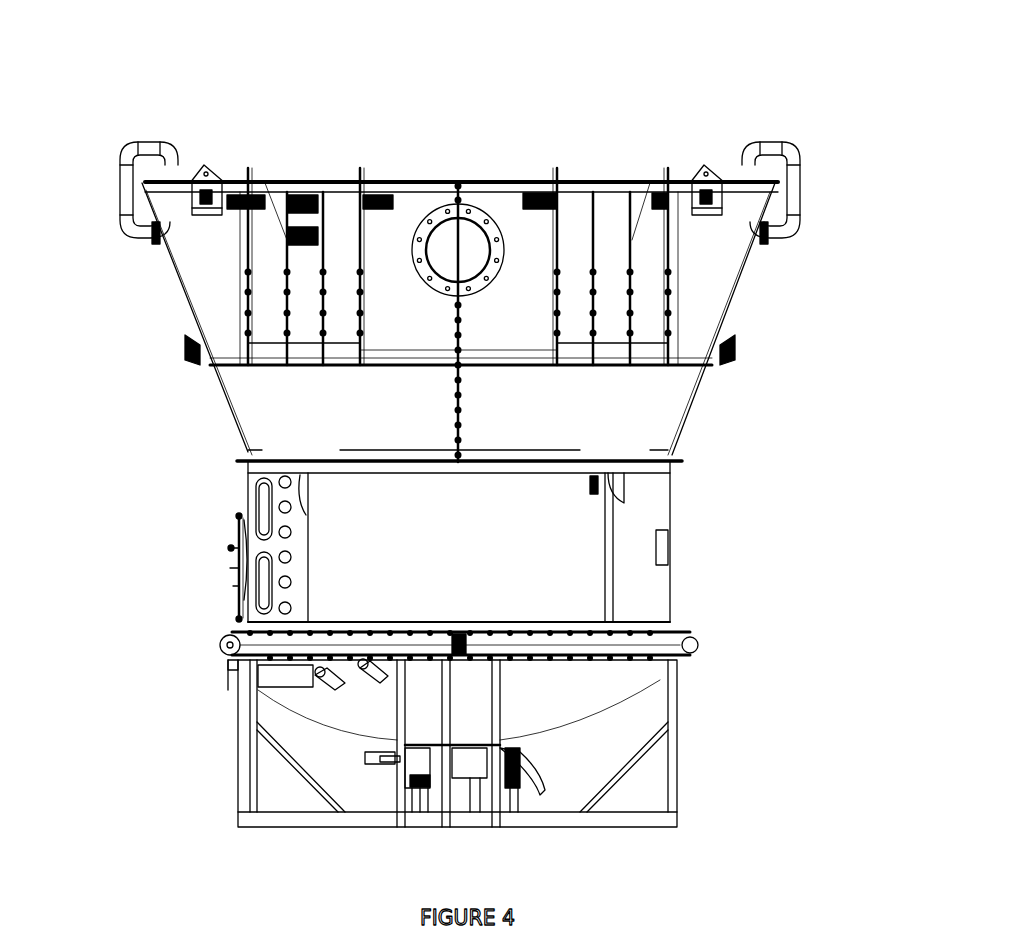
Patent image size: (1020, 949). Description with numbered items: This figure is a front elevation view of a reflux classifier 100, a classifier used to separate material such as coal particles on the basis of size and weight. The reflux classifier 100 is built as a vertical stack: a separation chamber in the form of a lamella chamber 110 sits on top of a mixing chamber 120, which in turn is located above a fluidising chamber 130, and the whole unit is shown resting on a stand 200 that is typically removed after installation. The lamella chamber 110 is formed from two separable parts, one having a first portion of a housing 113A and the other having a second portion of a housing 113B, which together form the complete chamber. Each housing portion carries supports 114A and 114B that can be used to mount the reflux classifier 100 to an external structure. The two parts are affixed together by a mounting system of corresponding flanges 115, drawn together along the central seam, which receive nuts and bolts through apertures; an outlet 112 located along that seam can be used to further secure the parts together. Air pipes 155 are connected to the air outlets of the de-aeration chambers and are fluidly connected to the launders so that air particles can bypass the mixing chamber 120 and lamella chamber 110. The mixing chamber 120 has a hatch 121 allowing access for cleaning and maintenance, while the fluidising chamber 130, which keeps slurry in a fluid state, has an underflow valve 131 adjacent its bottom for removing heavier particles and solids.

The reflux classifier 100 is at (765, 65).
The lamella chamber 110 is at (410, 208).
The outlet 112 is at (482, 208).
The first portion of a housing 113A is at (210, 263).
The second portion of a housing 113B is at (706, 263).
The supports 114A is at (245, 301).
The supports 114B is at (674, 301).
The flanges 115 is at (468, 406).
The mixing chamber 120 is at (652, 501).
The hatch 121 is at (232, 557).
The fluidising chamber 130 is at (650, 641).
The underflow valve 131 is at (457, 778).
The air pipe 155 is at (795, 147).
The stand 200 is at (680, 753).